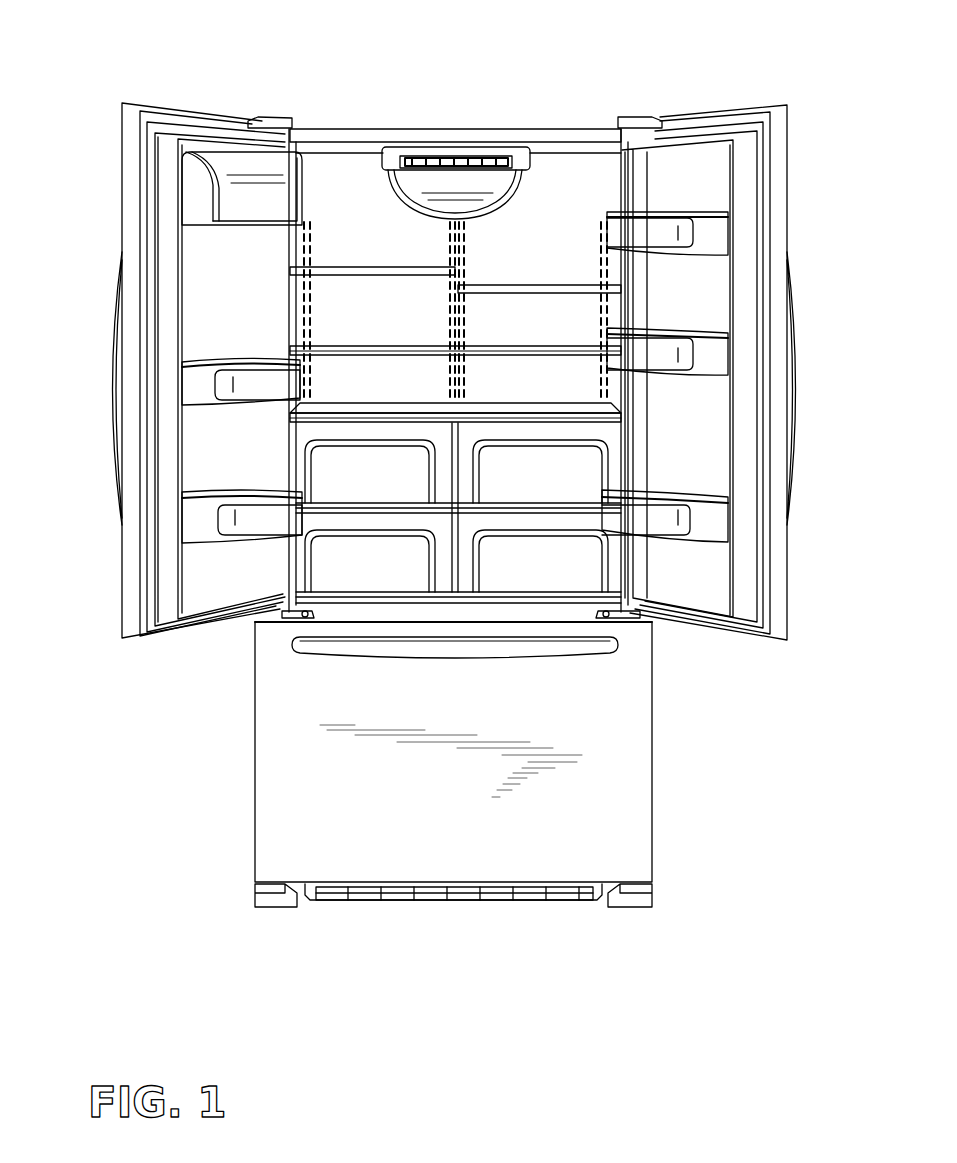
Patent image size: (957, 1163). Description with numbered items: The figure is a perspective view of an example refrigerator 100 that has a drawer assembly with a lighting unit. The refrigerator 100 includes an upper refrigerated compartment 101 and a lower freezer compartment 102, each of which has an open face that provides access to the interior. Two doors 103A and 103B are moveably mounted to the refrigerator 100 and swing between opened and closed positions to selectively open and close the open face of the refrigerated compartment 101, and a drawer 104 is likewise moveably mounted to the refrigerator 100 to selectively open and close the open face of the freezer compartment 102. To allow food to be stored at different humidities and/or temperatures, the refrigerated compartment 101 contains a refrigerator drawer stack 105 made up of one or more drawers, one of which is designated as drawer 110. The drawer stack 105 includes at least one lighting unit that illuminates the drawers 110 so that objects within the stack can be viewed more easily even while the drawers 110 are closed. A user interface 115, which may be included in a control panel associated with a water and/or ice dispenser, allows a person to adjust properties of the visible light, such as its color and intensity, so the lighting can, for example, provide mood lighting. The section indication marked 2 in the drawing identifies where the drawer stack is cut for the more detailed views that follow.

The refrigerator 100 is at (727, 72).
The refrigerated compartment 101 is at (586, 173).
The freezer compartment 102 is at (628, 647).
The door 103A is at (787, 210).
The door 103B is at (122, 217).
The drawer 104 is at (635, 738).
The refrigerator drawer stack 105 is at (622, 440).
The drawer 110 is at (553, 448).
The user interface 115 is at (110, 350).
The section line 2- 2 is at (455, 405).